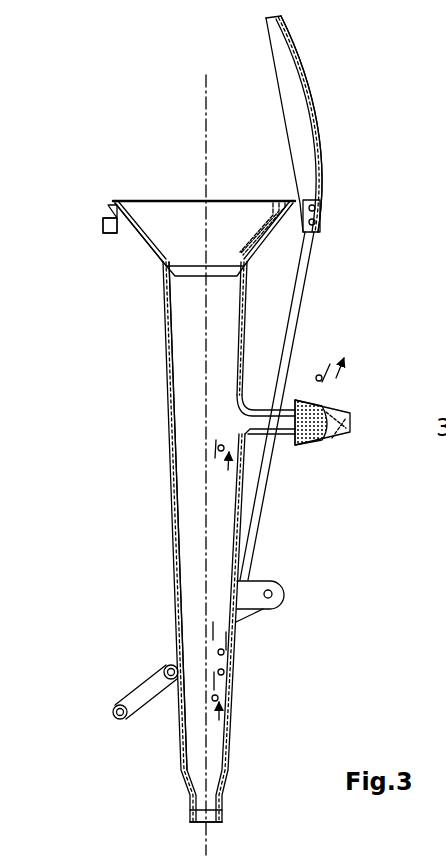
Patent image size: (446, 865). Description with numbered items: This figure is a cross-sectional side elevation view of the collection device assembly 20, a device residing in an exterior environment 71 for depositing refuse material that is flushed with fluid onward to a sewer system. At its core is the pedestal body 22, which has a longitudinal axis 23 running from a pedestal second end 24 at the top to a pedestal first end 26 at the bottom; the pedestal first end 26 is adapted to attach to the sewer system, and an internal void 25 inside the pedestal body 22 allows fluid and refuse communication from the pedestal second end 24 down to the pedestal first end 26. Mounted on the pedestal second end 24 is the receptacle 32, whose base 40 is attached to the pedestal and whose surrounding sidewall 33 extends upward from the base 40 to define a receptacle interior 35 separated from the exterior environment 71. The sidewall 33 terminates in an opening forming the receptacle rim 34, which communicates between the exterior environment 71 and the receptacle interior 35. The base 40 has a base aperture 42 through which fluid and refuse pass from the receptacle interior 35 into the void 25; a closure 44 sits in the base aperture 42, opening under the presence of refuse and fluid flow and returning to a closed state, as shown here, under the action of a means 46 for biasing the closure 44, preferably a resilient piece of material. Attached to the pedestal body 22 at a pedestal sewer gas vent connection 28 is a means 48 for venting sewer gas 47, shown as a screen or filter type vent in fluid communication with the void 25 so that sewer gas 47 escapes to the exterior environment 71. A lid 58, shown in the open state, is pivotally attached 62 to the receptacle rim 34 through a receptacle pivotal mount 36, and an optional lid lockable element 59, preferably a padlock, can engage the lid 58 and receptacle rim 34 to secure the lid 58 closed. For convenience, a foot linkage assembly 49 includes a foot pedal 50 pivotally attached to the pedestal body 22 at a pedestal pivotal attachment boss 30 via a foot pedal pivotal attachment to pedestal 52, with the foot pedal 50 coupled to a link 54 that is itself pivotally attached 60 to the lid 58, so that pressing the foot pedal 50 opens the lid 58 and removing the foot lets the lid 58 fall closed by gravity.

The collection device assembly 20 is at (148, 124).
The pedestal body 22 is at (165, 372).
The longitudinal axis 23 is at (206, 90).
The pedestal second end 24 is at (165, 265).
The internal void 25 is at (200, 516).
The pedestal first end 26 is at (190, 820).
The pedestal sewer gas vent connection 28 is at (250, 420).
The pedestal pivotal attachment boss 30 is at (278, 612).
The receptacle 32 is at (108, 258).
The sidewall 33 is at (120, 232).
The receptacle rim 34 is at (117, 204).
The receptacle interior 35 is at (222, 203).
The receptacle pivotal mount 36 is at (305, 165).
The base 40 is at (188, 262).
The base aperture 42 is at (188, 278).
The closure 44 is at (176, 410).
The means for biasing the closure 46 is at (248, 310).
The sewer gas 47 is at (320, 378).
The means for venting sewer gas 48 is at (318, 443).
The foot linkage assembly 49 is at (108, 708).
The foot pedal 50 is at (165, 668).
The foot pedal pivotal attachment to pedestal 52 is at (272, 594).
The link 54 is at (268, 498).
The lid 58 is at (292, 45).
The lid lockable element 59 is at (110, 216).
The pivotal attachment of link to lid 60 is at (320, 225).
The pivotal attachment of lid 62 is at (318, 207).
The exterior environment 71 is at (366, 392).